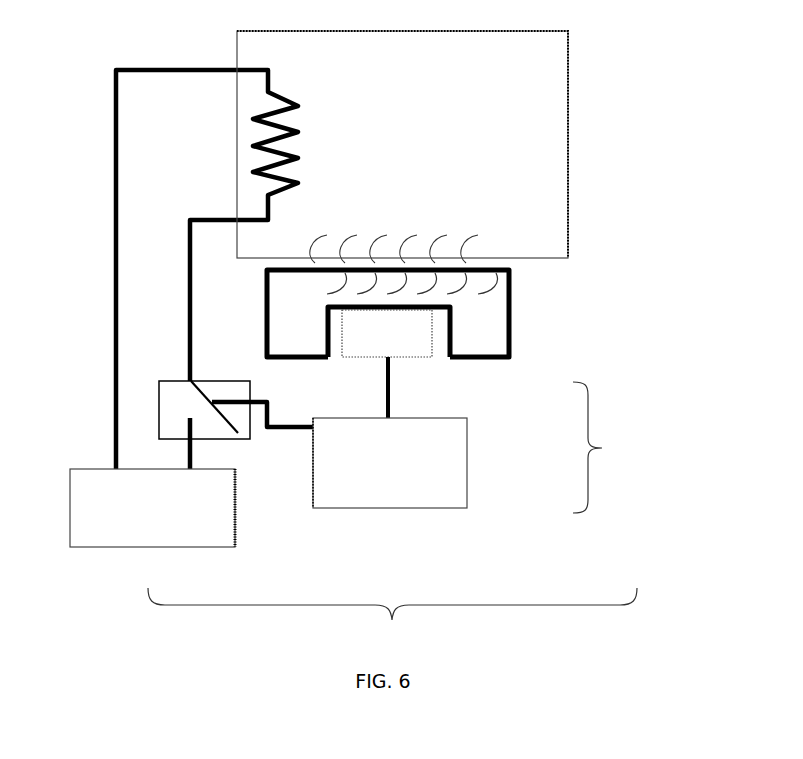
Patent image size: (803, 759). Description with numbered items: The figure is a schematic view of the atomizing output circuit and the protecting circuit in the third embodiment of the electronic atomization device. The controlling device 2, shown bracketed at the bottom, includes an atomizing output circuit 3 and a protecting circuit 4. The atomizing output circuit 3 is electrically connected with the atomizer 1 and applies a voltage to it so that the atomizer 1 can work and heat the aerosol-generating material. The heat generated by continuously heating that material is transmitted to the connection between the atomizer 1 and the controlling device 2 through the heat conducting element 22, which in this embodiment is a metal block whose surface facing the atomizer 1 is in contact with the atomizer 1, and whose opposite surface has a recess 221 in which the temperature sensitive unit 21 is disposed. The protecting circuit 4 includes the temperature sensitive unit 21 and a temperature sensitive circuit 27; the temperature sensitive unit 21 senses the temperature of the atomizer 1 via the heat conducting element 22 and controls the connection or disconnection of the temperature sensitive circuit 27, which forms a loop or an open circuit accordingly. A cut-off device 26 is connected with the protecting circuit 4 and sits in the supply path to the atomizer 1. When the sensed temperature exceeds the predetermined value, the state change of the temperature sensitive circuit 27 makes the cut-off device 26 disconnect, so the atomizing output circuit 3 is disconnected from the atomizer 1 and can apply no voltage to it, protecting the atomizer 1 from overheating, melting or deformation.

The atomizer 1 is at (497, 140).
The controlling device 2 is at (392, 622).
The atomizing output circuit 3 is at (138, 530).
The protecting circuit 4 is at (608, 447).
The temperature sensitive unit 21 is at (403, 333).
The heat conducting element 22 is at (495, 298).
The recess 221 is at (440, 335).
The cut-off device 26 is at (172, 397).
The temperature sensitive circuit 27 is at (442, 482).